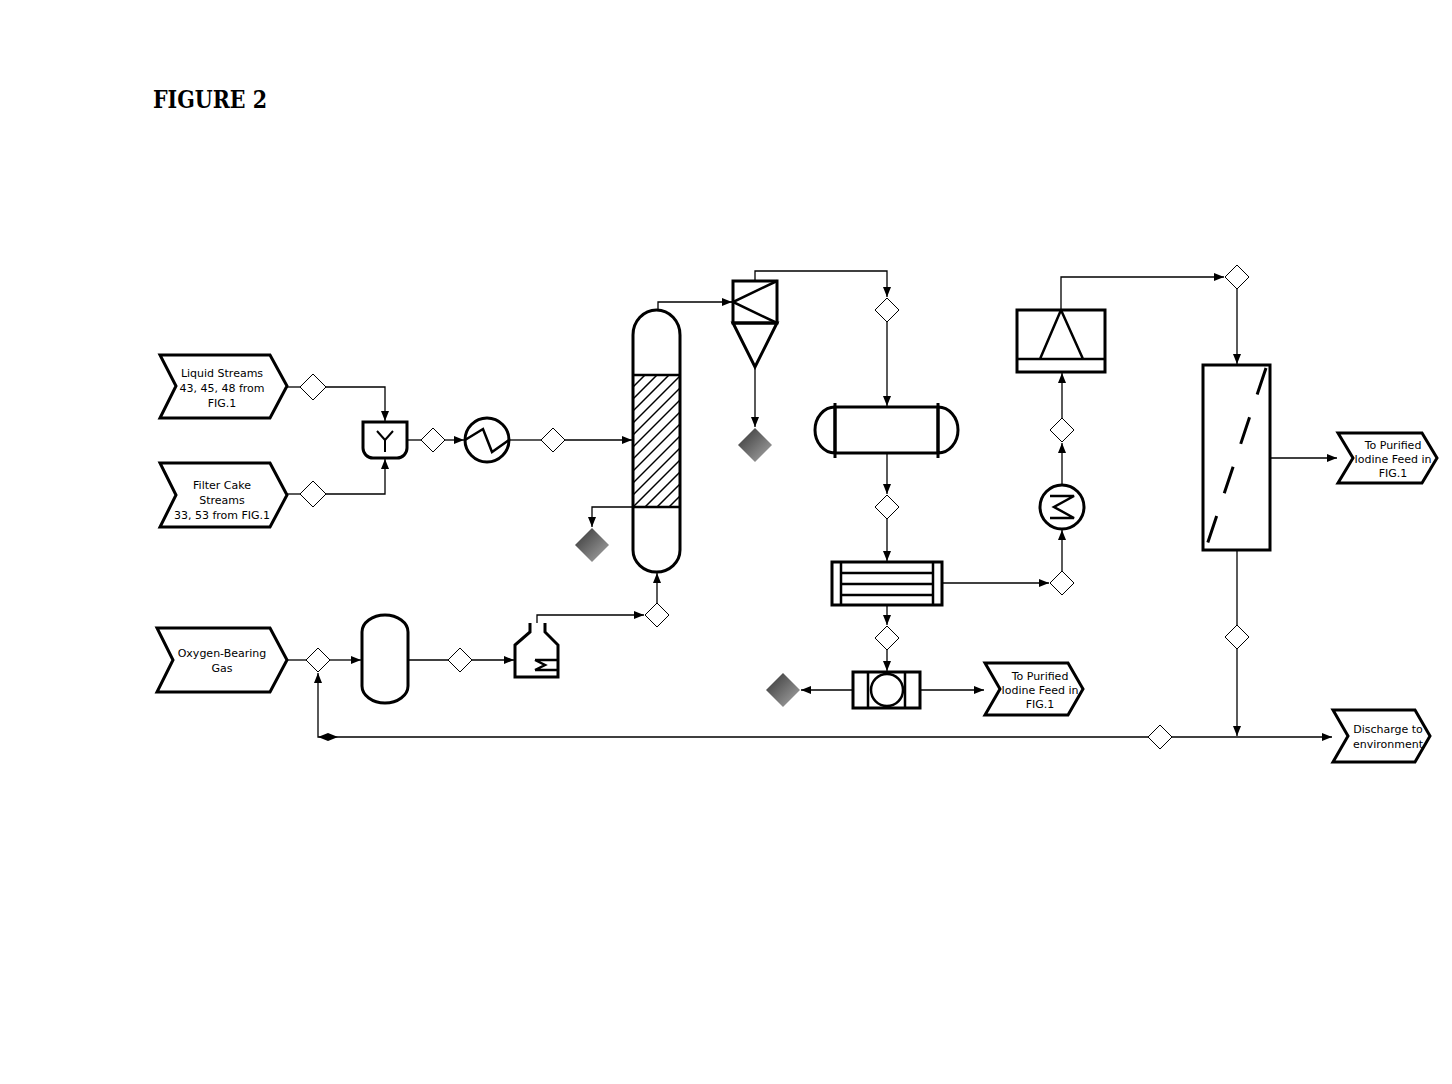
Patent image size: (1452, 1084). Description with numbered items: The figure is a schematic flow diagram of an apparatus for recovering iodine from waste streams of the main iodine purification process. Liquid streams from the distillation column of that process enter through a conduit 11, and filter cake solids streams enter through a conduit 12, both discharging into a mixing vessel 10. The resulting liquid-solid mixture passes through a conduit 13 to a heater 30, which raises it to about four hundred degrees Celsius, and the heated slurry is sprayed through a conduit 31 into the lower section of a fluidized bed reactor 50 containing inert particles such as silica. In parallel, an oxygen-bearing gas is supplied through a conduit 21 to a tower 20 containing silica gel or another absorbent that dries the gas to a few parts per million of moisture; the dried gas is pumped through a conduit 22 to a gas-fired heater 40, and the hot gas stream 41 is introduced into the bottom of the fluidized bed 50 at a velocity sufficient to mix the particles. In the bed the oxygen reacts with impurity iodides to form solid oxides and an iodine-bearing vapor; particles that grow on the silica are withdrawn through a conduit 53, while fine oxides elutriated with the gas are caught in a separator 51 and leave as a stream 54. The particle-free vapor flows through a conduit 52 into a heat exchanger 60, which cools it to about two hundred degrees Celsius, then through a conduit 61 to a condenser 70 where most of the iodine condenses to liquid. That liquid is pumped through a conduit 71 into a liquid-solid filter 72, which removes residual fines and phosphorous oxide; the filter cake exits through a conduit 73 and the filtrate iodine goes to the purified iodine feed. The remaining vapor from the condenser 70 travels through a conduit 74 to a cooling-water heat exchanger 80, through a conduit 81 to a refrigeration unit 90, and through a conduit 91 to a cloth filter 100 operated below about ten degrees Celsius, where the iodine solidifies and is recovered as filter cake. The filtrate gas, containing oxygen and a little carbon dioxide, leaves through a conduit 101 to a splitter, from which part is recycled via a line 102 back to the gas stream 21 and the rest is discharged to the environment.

The mixing vessel 10 is at (372, 440).
The conduit 11 is at (336, 397).
The conduit 12 is at (336, 491).
The conduit 13 is at (435, 448).
The oxygen-bearing gas receiver tank 20 is at (396, 663).
The conduit 21 is at (324, 651).
The conduit 22 is at (461, 668).
The heater 30 is at (487, 454).
The conduit 31 is at (570, 449).
The gas-fired heater 40 is at (536, 661).
The gas stream 41 is at (603, 609).
The fluidized bed reactor 50 is at (651, 441).
The separator 51 is at (729, 324).
The conduit 52 is at (827, 338).
The conduit 53 is at (592, 534).
The stream 54 is at (744, 414).
The heat exchanger 60 is at (887, 442).
The conduit 61 is at (873, 507).
The condenser 70 is at (875, 573).
The conduit 71 is at (873, 638).
The liquid-solid filter 72 is at (918, 699).
The conduit 73 is at (797, 690).
The conduit 74 is at (1008, 570).
The cooling-water heat exchanger 80 is at (1073, 510).
The conduit 81 is at (1073, 429).
The refrigeration unit 90 is at (1072, 352).
The conduit 91 is at (1170, 314).
The cloth-filter 100 is at (1253, 467).
The conduit 101 is at (1220, 643).
The recycle conduit 102 is at (825, 719).